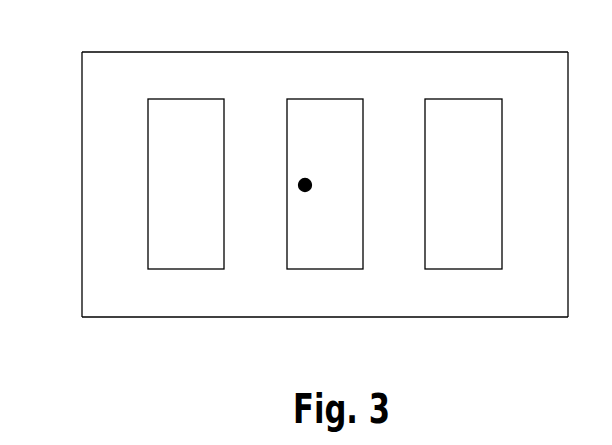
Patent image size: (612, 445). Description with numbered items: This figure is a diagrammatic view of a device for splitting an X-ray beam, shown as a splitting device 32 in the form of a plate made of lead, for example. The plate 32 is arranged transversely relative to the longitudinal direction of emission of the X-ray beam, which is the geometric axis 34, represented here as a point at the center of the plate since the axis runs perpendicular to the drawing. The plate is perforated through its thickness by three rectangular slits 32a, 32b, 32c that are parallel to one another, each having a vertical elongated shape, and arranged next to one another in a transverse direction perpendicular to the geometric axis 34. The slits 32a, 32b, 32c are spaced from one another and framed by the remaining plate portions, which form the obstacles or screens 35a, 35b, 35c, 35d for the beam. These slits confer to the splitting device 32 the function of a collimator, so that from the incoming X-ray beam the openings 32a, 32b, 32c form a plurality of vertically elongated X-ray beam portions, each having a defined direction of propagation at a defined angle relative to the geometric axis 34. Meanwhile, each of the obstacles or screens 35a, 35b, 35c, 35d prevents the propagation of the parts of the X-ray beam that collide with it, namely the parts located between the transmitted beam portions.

The splitting device 32 is at (309, 184).
The slit 32a is at (458, 258).
The slit 32b is at (318, 253).
The slit 32c is at (186, 246).
The geometric axis 34 is at (305, 178).
The obstacle or screen 35a is at (530, 145).
The obstacle or screen 35b is at (388, 140).
The obstacle or screen 35c is at (250, 145).
The obstacle or screen 35d is at (124, 194).